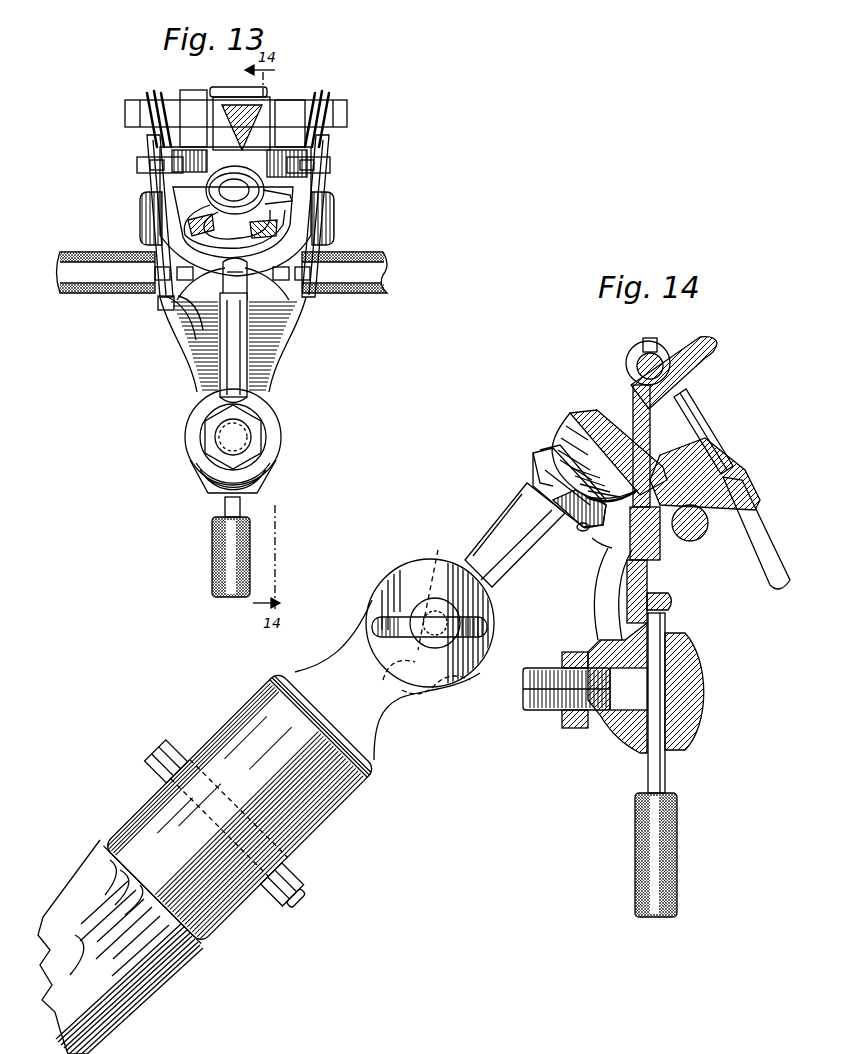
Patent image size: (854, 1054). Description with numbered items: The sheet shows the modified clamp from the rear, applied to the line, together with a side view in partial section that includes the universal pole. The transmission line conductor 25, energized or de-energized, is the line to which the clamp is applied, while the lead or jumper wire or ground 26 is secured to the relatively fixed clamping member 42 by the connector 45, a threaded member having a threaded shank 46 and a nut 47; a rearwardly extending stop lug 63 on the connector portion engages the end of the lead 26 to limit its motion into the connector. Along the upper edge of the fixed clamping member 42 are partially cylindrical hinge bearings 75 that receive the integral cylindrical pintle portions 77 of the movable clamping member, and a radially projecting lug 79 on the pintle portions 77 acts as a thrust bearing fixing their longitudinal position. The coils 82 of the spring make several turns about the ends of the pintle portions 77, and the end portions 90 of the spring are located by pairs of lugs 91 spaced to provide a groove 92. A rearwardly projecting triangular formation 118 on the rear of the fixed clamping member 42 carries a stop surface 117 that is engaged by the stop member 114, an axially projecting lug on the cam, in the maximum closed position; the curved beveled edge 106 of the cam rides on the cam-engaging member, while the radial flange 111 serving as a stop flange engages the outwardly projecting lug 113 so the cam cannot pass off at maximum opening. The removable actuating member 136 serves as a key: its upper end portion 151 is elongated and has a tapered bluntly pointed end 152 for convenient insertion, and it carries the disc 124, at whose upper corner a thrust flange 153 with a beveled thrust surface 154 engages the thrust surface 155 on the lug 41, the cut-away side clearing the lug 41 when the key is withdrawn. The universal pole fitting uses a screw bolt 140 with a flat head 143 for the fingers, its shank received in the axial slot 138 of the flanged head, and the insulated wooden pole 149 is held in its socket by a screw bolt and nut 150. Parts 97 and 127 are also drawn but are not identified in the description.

In FIG. 13, the transmission line conductor 25 is at (372, 248).
In FIG. 14, the transmission line conductor 25 is at (708, 523).
In FIG. 13, the lead or jumper wire 26 is at (211, 557).
In FIG. 14, the lead or jumper wire 26 is at (670, 855).
In FIG. 13, the outwardly projecting lug 41 is at (188, 333).
In FIG. 14, the outwardly projecting lug 41 is at (600, 572).
In FIG. 13, the relatively fixed clamping member 42 is at (217, 351).
In FIG. 14, the relatively fixed clamping member 42 is at (615, 598).
In FIG. 14, the connector 45 is at (703, 670).
In FIG. 13, the threaded shank 46 is at (246, 438).
In FIG. 14, the threaded shank 46 is at (538, 712).
In FIG. 13, the nut 47 is at (268, 447).
In FIG. 14, the rearwardly extending stop lug 63 is at (674, 602).
In FIG. 14, the hinge bearings 75 is at (630, 358).
In FIG. 14, the pintle portions 77 is at (660, 355).
In FIG. 14, the radially projecting lug 79 is at (652, 340).
In FIG. 13, the coils of the spring 82 is at (150, 93).
In FIG. 13, the end portions of the spring 90 is at (140, 232).
In FIG. 13, the lugs 91 is at (320, 170).
In FIG. 13, the groove 92 is at (152, 176).
In FIG. 14, the lock nut 97 is at (572, 730).
In FIG. 14, the curved beveled edge 106 is at (572, 412).
In FIG. 14, the radial stop flange 111 is at (580, 530).
In FIG. 13, the outwardly projecting lug 113 is at (168, 306).
In FIG. 14, the outwardly projecting lug 113 is at (647, 550).
In FIG. 14, the stop member 114 is at (705, 450).
In FIG. 13, the stop surface 117 is at (262, 186).
In FIG. 13, the rearwardly projecting triangular formation 118 is at (292, 199).
In FIG. 14, the disc 124 is at (535, 478).
In FIG. 14, the cylindrical housing 127 is at (235, 726).
In FIG. 14, the actuating member 136 is at (500, 575).
In FIG. 14, the axial slot 138 is at (470, 594).
In FIG. 14, the screw bolt 140 is at (432, 593).
In FIG. 14, the flat head 143 is at (383, 592).
In FIG. 14, the insulated wooden pole 149 is at (150, 995).
In FIG. 14, the screw bolt and nut 150 is at (305, 905).
In FIG. 14, the upper end portion 151 is at (700, 391).
In FIG. 14, the tapered bluntly pointed end 152 is at (716, 344).
In FIG. 14, the thrust flange 153 is at (558, 446).
In FIG. 14, the frusto-conical thrust surface 154 is at (533, 455).
In FIG. 14, the thrust surface 155 is at (598, 543).